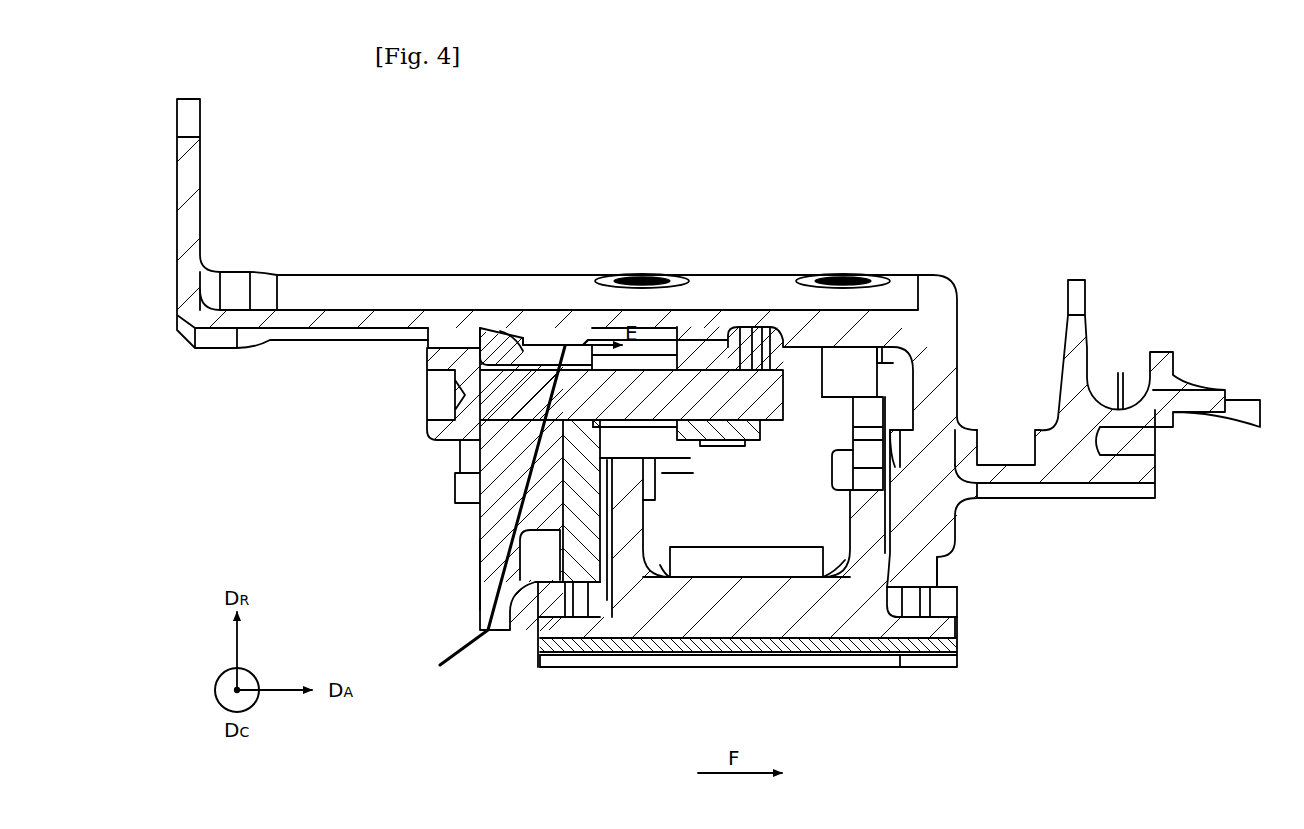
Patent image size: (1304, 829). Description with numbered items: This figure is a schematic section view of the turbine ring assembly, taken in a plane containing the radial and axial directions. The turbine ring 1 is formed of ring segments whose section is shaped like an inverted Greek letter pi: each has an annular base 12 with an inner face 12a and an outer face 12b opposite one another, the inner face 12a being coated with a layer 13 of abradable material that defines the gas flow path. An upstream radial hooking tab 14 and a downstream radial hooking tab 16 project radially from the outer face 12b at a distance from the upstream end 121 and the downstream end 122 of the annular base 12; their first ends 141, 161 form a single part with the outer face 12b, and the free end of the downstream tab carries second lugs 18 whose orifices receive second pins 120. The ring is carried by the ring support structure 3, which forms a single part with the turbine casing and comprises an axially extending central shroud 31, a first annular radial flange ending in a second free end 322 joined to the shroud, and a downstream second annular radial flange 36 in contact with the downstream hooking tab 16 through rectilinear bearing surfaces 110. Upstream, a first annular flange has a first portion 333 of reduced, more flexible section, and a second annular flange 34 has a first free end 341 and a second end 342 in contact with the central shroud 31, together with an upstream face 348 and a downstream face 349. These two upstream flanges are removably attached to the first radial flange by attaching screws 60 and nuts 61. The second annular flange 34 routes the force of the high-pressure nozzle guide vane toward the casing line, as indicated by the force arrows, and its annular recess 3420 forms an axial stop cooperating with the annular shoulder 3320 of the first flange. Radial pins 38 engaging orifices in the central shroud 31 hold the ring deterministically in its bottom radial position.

The turbine ring 1 is at (985, 706).
The ring support structure 3 is at (347, 270).
The central shroud 31 is at (395, 290).
The annular recess 3420 is at (492, 340).
The annular shoulder 3320 is at (543, 338).
The radial pins 38 is at (647, 272).
The second free end 322 is at (690, 330).
The second end 342 is at (470, 338).
The attaching screws 60 is at (433, 427).
The nuts 61 is at (740, 438).
The second annular flange 34 is at (457, 478).
The downstream face 349 is at (532, 542).
The upstream face 348 is at (476, 576).
The first free end 341 is at (476, 616).
The annular base 12 is at (745, 625).
The inner face 12a is at (825, 630).
The outer face 12b is at (672, 585).
The layer of abradable material 13 is at (783, 648).
The upstream radial hooking tab 14 is at (625, 560).
The first end of upstream hooking tab 141 is at (660, 562).
The downstream radial hooking tab 16 is at (865, 550).
The first end of downstream hooking tab 161 is at (832, 566).
The second lugs 18 is at (866, 418).
The second pins 120 is at (842, 474).
The rectilinear bearing surfaces 110 is at (535, 603).
The upstream end of annular base 121 is at (535, 661).
The downstream end of annular base 122 is at (962, 651).
The first portion of first annular flange 333 is at (612, 495).
The second annular radial flange 36 is at (925, 522).